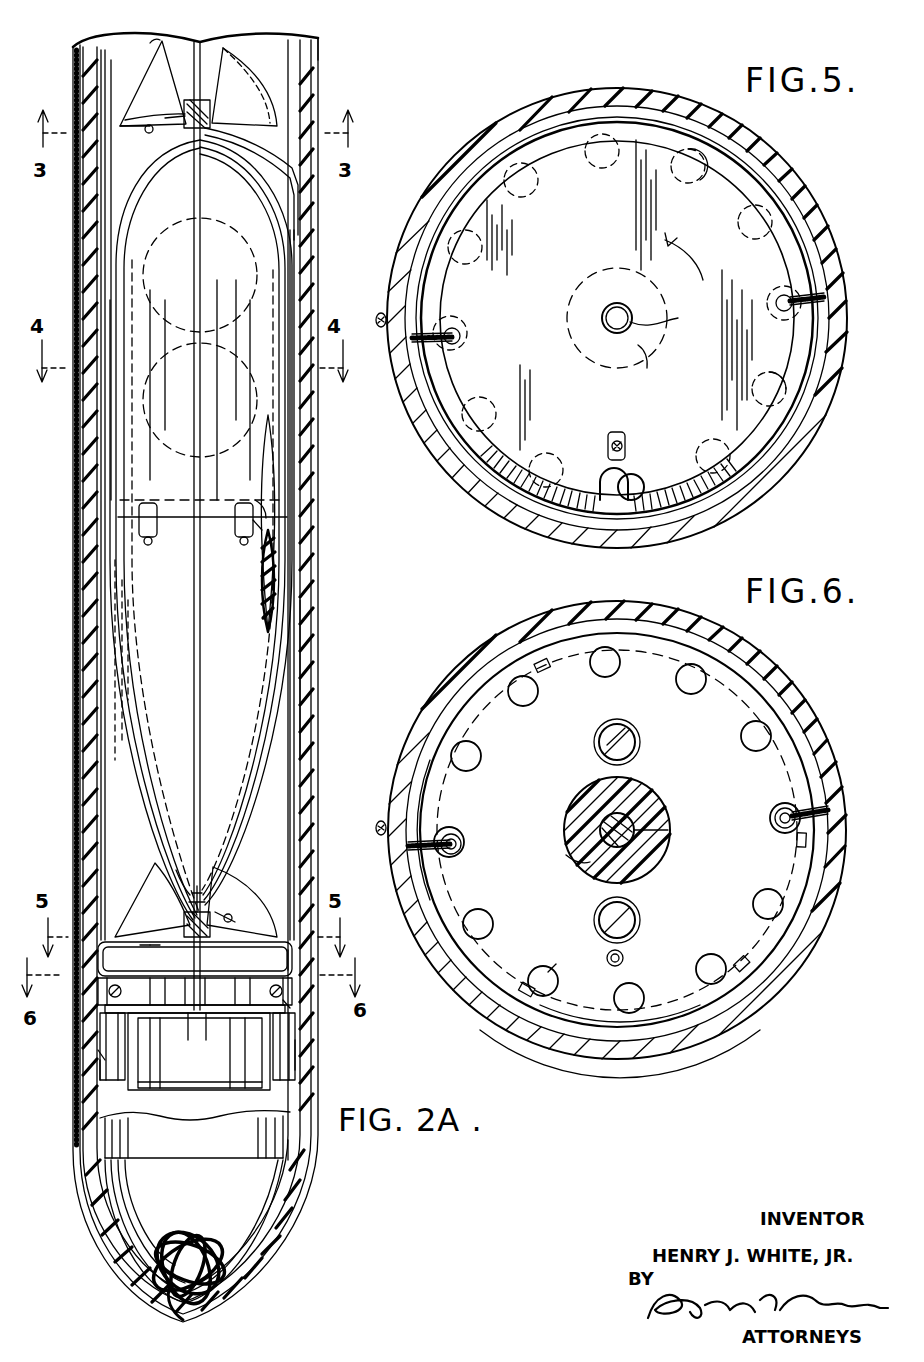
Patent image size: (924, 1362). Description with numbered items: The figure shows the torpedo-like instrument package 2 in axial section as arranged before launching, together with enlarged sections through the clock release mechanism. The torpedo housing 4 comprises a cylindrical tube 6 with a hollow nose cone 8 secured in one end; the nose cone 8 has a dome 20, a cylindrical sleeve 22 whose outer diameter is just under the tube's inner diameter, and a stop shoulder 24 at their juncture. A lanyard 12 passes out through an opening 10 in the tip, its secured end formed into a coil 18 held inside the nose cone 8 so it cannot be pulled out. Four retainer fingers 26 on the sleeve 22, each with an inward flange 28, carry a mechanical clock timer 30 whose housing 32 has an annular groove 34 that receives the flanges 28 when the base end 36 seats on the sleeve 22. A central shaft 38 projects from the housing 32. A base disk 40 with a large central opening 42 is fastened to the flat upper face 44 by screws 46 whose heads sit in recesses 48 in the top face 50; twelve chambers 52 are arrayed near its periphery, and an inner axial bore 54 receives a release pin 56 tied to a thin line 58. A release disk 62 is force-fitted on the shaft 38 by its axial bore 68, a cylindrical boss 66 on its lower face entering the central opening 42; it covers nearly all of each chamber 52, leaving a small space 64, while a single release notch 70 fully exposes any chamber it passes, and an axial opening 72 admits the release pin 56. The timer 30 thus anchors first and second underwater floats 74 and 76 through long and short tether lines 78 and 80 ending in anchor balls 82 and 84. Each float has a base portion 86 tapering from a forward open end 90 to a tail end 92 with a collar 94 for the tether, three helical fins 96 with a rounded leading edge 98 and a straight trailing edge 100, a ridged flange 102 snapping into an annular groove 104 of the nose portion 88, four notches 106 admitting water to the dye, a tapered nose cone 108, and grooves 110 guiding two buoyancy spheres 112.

In FIG. 2A, the instrument package 2 is at (337, 619).
In FIG. 2A, the torpedo housing 4 is at (318, 682).
In FIG. 2A, the cylindrical tube 6 is at (303, 560).
In FIG. 5, the cylindrical tube 6 is at (770, 462).
In FIG. 6, the cylindrical tube 6 is at (675, 1043).
In FIG. 2A, the nose cone 8 is at (309, 1238).
In FIG. 2A, the opening 10 is at (192, 1320).
In FIG. 2A, the lanyard 12 is at (78, 1105).
In FIG. 5, the lanyard 12 is at (382, 328).
In FIG. 6, the lanyard 12 is at (384, 836).
In FIG. 2A, the coil 18 is at (205, 1235).
In FIG. 2A, the dome 20 is at (306, 1210).
In FIG. 2A, the cylindrical sleeve 22 is at (290, 1118).
In FIG. 6, the cylindrical sleeve 22 is at (580, 1058).
In FIG. 2A, the stop shoulder 24 is at (305, 1152).
In FIG. 2A, the retainer fingers 26 is at (292, 1045).
In FIG. 6, the retainer fingers 26 is at (470, 672).
In FIG. 2A, the flange 28 is at (238, 1020).
In FIG. 2A, the mechanical clock timer 30 is at (292, 1062).
In FIG. 6, the mechanical clock timer 30 is at (645, 1069).
In FIG. 2A, the housing 32 is at (95, 1062).
In FIG. 2A, the annular groove 34 is at (165, 1020).
In FIG. 6, the annular groove 34 is at (593, 618).
In FIG. 2A, the base end 36 is at (180, 1086).
In FIG. 5, the central shaft 38 is at (618, 310).
In FIG. 6, the central shaft 38 is at (672, 795).
In FIG. 2A, the base disk 40 is at (97, 988).
In FIG. 5, the base disk 40 is at (700, 490).
In FIG. 6, the base disk 40 is at (815, 858).
In FIG. 5, the central opening 42 is at (575, 343).
In FIG. 6, the central opening 42 is at (655, 855).
In FIG. 2A, the flat upper face 44 is at (213, 1053).
In FIG. 6, the screws 46 is at (638, 752).
In FIG. 6, the recesses 48 is at (594, 746).
In FIG. 2A, the top face 50 is at (228, 992).
In FIG. 6, the top face 50 is at (440, 800).
In FIG. 2A, the chambers 52 is at (146, 966).
In FIG. 5, the chambers 52 is at (538, 192).
In FIG. 6, the chambers 52 is at (603, 668).
In FIG. 2A, the axial bore 54 is at (192, 1013).
In FIG. 6, the axial bore 54 is at (622, 956).
In FIG. 2A, the release pin 56 is at (208, 903).
In FIG. 5, the release pin 56 is at (622, 470).
In FIG. 6, the release pin 56 is at (553, 976).
In FIG. 2A, the thin line 58 is at (218, 735).
In FIG. 2A, the release disk 62 is at (292, 966).
In FIG. 5, the release disk 62 is at (795, 350).
In FIG. 5, the space 64 is at (705, 172).
In FIG. 2A, the cylindrical boss 66 is at (140, 945).
In FIG. 5, the cylindrical boss 66 is at (647, 368).
In FIG. 6, the cylindrical boss 66 is at (572, 848).
In FIG. 5, the axial bore 68 is at (678, 320).
In FIG. 6, the axial bore 68 is at (668, 840).
In FIG. 5, the release notch 70 is at (596, 478).
In FIG. 5, the axial opening 72 is at (626, 440).
In FIG. 2A, the first underwater float 74 is at (254, 55).
In FIG. 2A, the second underwater float 76 is at (270, 786).
In FIG. 2A, the long tether line 78 is at (242, 140).
In FIG. 5, the long tether line 78 is at (822, 298).
In FIG. 6, the long tether line 78 is at (822, 808).
In FIG. 2A, the short tether line 80 is at (150, 945).
In FIG. 5, the short tether line 80 is at (430, 325).
In FIG. 6, the short tether line 80 is at (450, 836).
In FIG. 2A, the anchor ball 82 is at (295, 1005).
In FIG. 5, the anchor ball 82 is at (782, 298).
In FIG. 6, the anchor ball 82 is at (784, 814).
In FIG. 2A, the anchor ball 84 is at (98, 1058).
In FIG. 5, the anchor ball 84 is at (465, 340).
In FIG. 6, the anchor ball 84 is at (458, 838).
In FIG. 2A, the base portion 86 is at (273, 660).
In FIG. 2A, the nose portion 88 is at (282, 428).
In FIG. 2A, the forward open end 90 is at (168, 46).
In FIG. 2A, the tail end 92 is at (178, 875).
In FIG. 2A, the collar 94 is at (182, 128).
In FIG. 2A, the fins 96 is at (250, 115).
In FIG. 2A, the leading edge 98 is at (140, 75).
In FIG. 2A, the trailing edge 100 is at (150, 125).
In FIG. 2A, the ridged flange 102 is at (257, 537).
In FIG. 2A, the annular groove 104 is at (280, 510).
In FIG. 2A, the notches 106 is at (252, 524).
In FIG. 2A, the tapered nose cone 108 is at (283, 240).
In FIG. 2A, the grooves 110 is at (275, 448).
In FIG. 2A, the buoyancy spheres 112 is at (250, 283).